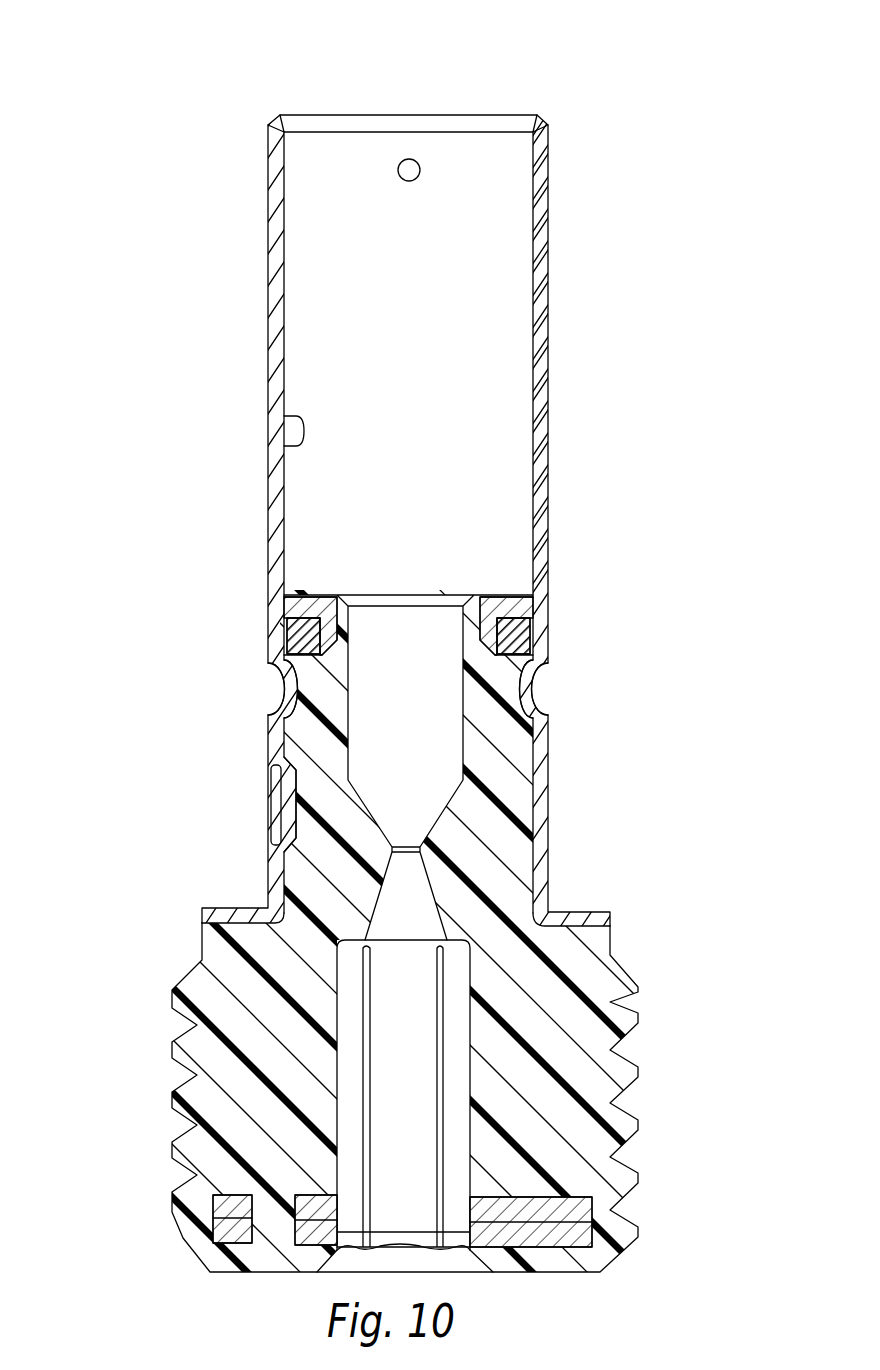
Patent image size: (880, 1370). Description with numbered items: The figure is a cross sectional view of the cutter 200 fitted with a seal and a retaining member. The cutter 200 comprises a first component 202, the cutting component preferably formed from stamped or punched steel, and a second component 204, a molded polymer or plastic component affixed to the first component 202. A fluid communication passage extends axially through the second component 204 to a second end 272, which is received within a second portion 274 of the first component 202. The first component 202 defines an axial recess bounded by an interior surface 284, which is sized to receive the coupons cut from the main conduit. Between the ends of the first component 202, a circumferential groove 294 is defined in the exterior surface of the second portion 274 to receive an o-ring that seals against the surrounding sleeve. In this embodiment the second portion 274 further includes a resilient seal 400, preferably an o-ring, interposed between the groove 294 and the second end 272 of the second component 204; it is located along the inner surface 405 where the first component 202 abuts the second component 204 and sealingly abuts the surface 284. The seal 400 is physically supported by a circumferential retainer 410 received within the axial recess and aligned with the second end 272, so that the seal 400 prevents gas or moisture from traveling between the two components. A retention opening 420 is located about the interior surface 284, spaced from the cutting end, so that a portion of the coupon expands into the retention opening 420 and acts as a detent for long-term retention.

The cutter 200 is at (606, 72).
The first component 202 is at (232, 303).
The second component 204 is at (145, 903).
The second end 272 is at (478, 595).
The second portion 274 is at (263, 748).
The interior surface 284 is at (285, 445).
The circumferential groove 294 is at (272, 690).
The resilient seal 400 is at (532, 636).
The inner surface 405 is at (280, 608).
The circumferential retainer 410 is at (537, 605).
The retention opening 420 is at (402, 178).